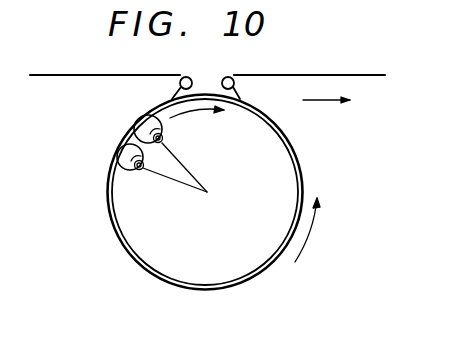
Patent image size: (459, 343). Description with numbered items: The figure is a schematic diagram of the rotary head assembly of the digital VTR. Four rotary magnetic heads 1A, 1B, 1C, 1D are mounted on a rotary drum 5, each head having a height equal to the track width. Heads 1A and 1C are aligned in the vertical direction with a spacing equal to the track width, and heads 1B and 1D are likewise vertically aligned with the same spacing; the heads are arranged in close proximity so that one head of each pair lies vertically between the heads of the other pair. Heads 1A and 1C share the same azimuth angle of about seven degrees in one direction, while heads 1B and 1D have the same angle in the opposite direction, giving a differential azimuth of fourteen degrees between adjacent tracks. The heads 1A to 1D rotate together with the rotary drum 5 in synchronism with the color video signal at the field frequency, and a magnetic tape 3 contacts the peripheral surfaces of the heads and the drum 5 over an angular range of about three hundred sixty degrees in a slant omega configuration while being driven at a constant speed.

The rotary magnetic head 1A is at (126, 203).
The rotary magnetic head 1B is at (136, 140).
The rotary magnetic head 1C is at (120, 172).
The rotary magnetic head 1D is at (130, 126).
The magnetic tape 3 is at (246, 283).
The rotary drum 5 is at (153, 245).